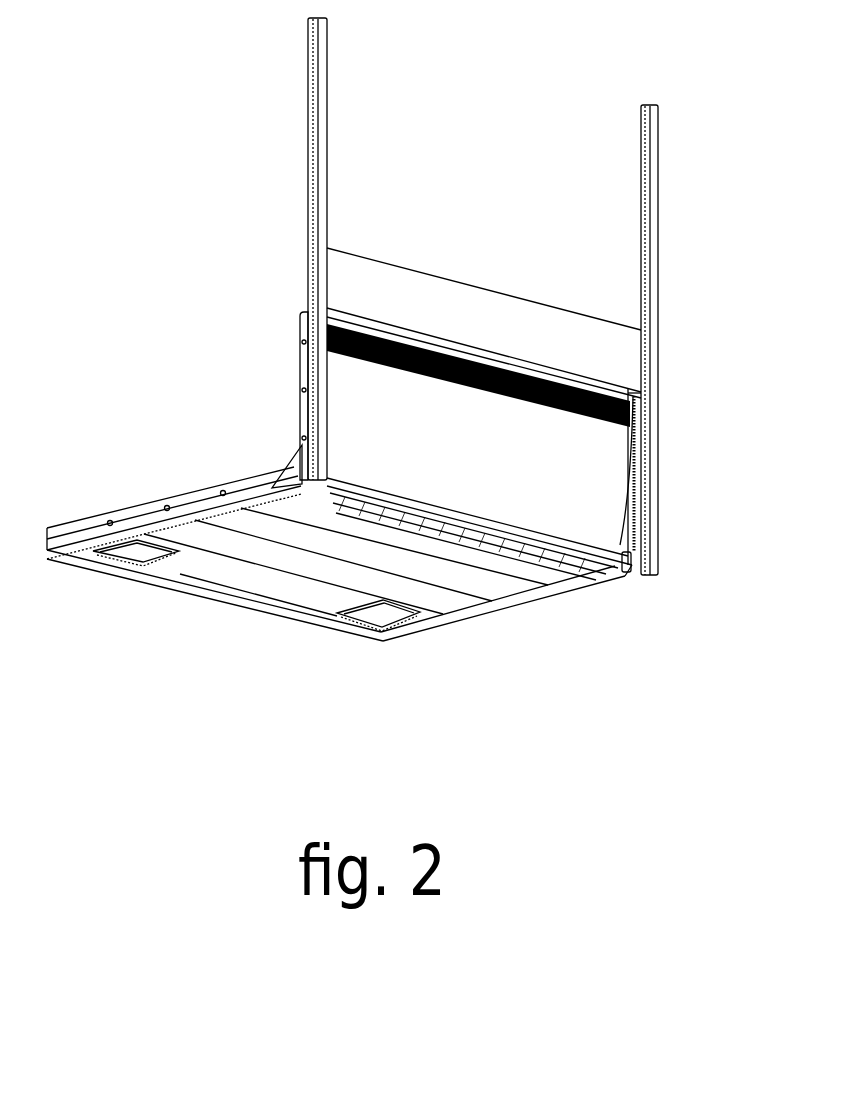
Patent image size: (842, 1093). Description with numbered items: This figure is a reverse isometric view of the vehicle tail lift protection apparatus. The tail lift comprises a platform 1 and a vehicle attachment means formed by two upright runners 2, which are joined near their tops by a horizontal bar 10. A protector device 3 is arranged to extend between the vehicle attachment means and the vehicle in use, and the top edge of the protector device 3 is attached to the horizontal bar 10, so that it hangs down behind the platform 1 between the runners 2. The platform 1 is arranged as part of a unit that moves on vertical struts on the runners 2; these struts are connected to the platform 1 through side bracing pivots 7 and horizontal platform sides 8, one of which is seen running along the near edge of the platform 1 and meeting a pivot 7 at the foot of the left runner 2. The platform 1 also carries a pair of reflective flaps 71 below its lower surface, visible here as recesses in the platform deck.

The platform 1 is at (258, 565).
The runners 2 is at (308, 160).
The protector device 3 is at (598, 487).
The side bracing pivots 7 is at (283, 478).
The horizontal platform sides 8 is at (100, 517).
The horizontal bar 10 is at (640, 346).
The reflective flaps 71 is at (143, 555).